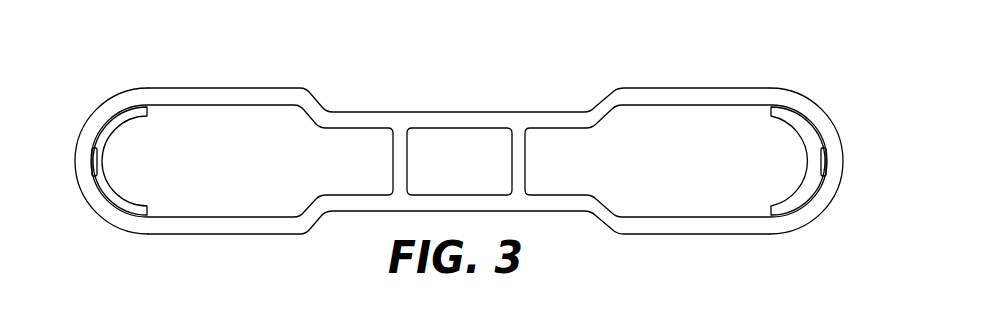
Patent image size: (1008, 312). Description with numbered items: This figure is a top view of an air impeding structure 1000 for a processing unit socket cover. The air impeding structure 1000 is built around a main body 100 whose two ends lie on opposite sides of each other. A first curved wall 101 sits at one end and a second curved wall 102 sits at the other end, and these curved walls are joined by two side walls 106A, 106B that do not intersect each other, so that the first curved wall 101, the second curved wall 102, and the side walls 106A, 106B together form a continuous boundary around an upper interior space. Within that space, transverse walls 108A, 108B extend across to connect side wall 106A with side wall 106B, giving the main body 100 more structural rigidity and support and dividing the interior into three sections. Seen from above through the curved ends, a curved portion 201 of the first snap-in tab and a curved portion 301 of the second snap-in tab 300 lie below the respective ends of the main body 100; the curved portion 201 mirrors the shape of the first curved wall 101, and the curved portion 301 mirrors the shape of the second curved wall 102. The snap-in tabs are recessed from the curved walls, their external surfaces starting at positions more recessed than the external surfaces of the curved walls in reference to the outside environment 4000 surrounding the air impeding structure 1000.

The air impeding structure 1000 is at (646, 68).
The main body 100 is at (555, 107).
The first curved wall 101 is at (88, 122).
The second curved wall 102 is at (837, 137).
The side wall 106A is at (245, 235).
The side wall 106B is at (693, 88).
The transverse wall 108A is at (393, 150).
The transverse wall 108B is at (512, 150).
The curved portion 201 is at (110, 138).
The curved portion 301 is at (808, 140).
The second snap-in tab 300 is at (268, 177).
The outside environment 4000 is at (245, 71).